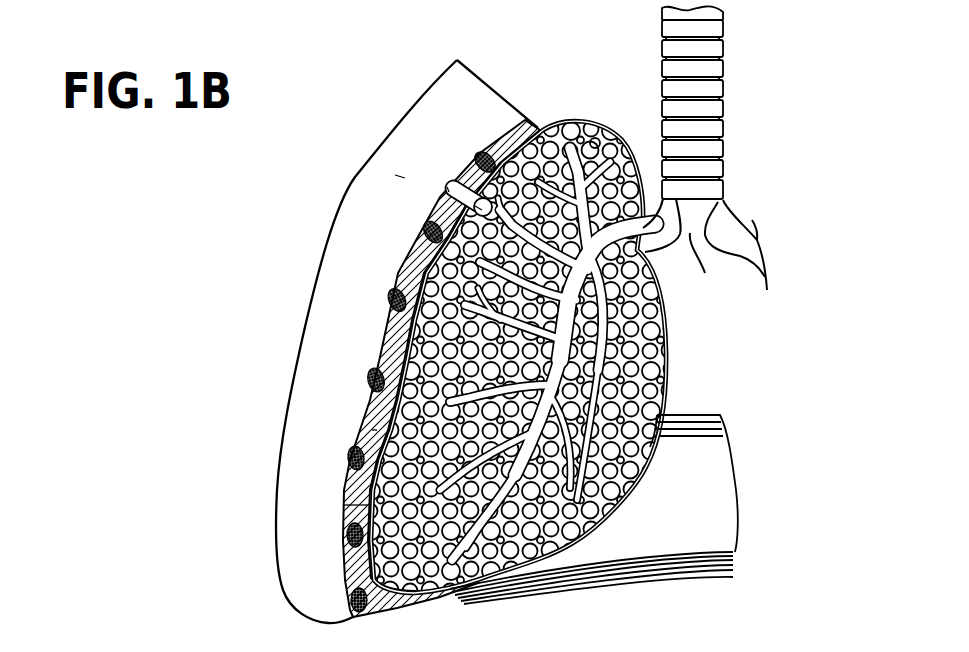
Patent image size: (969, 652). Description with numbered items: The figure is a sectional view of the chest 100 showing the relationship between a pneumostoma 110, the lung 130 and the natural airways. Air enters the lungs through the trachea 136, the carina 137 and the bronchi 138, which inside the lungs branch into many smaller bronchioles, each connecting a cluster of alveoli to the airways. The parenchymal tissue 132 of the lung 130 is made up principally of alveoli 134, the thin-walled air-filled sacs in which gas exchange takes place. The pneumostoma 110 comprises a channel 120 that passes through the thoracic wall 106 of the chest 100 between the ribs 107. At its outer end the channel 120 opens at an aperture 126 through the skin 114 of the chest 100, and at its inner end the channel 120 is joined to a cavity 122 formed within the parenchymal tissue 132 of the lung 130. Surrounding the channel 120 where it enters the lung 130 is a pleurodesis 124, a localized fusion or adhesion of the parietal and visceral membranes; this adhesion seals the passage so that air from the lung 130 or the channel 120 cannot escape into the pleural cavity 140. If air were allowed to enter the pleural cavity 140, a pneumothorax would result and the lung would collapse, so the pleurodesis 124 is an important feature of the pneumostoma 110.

The chest 100 is at (348, 265).
The thoracic wall 106 is at (356, 506).
The ribs 107 is at (437, 228).
The pneumostoma 110 is at (400, 177).
The skin 114 is at (375, 353).
The channel 120 is at (460, 196).
The cavity 122 is at (455, 182).
The pleurodesis 124 is at (480, 204).
The aperture 126 is at (480, 197).
The lung 130 is at (548, 132).
The parenchymal tissue 132 is at (568, 122).
The alveoli 134 is at (596, 140).
The trachea 136 is at (677, 70).
The carina 137 is at (634, 248).
The bronchi 138 is at (729, 250).
The pleural cavity 140 is at (376, 430).